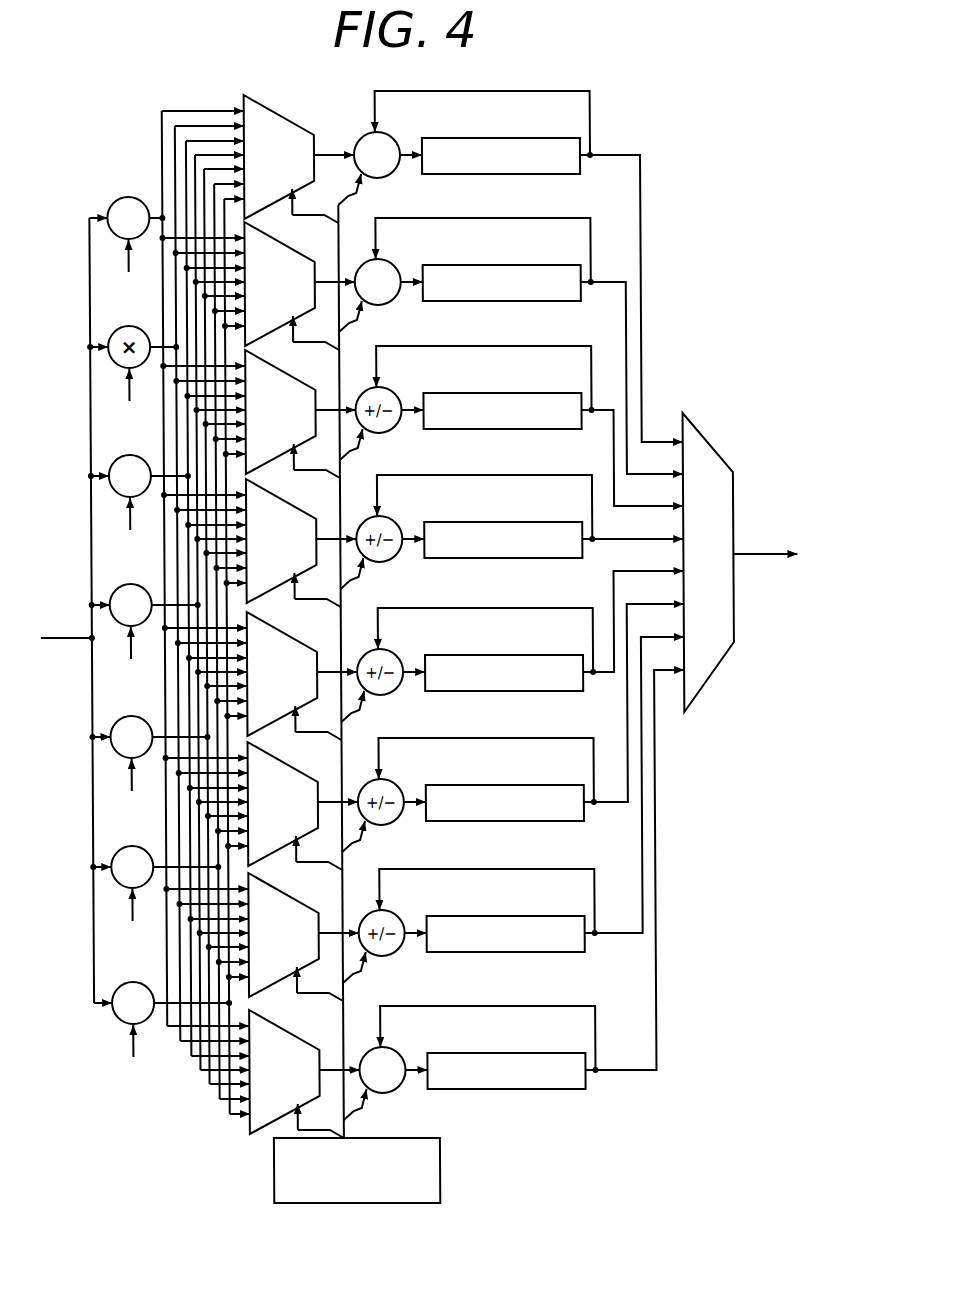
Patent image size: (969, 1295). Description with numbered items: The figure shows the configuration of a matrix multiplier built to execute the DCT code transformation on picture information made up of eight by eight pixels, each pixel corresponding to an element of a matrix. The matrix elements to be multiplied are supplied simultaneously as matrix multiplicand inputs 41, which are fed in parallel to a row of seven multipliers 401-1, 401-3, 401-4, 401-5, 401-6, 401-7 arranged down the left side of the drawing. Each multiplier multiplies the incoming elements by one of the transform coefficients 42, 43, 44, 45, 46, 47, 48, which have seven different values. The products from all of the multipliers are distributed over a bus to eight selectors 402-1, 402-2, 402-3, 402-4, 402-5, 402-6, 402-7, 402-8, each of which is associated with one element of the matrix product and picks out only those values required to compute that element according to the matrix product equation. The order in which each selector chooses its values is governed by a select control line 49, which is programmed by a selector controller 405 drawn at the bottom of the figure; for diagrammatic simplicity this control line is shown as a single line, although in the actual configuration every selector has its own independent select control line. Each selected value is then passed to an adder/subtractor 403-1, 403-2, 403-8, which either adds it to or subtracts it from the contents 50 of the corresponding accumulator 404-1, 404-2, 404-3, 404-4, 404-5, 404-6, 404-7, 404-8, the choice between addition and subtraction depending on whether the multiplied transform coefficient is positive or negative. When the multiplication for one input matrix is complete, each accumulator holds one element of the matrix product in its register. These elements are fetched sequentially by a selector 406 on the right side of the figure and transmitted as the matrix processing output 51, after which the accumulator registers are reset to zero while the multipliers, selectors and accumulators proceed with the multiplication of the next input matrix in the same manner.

The matrix multiplicand inputs 41 is at (50, 638).
The transform coefficient 42 is at (127, 273).
The transform coefficient 43 is at (127, 402).
The transform coefficient 44 is at (127, 531).
The transform coefficient 45 is at (127, 660).
The transform coefficient 46 is at (127, 792).
The transform coefficient 47 is at (127, 922).
The transform coefficient 48 is at (125, 1054).
The select control line 49 is at (340, 1117).
The contents of accumulator 50 is at (642, 228).
The matrix processing output 51 is at (760, 552).
The multiplier 401-1 is at (117, 198).
The multiplier 401-3 is at (117, 456).
The multiplier 401-4 is at (117, 585).
The multiplier 401-5 is at (117, 717).
The multiplier 401-6 is at (117, 847).
The multiplier 401-7 is at (117, 983).
The selector 402-1 is at (306, 127).
The selector 402-2 is at (306, 254).
The selector 402-3 is at (306, 382).
The selector 402-4 is at (306, 511).
The selector 402-5 is at (306, 644).
The selector 402-6 is at (306, 774).
The selector 402-7 is at (306, 905).
The selector 402-8 is at (306, 1042).
The adder/subtractor 403-1 is at (392, 138).
The adder/subtractor 403-2 is at (392, 265).
The adder/subtractor 403-8 is at (392, 1053).
The accumulator 404-1 is at (490, 138).
The accumulator 404-2 is at (490, 265).
The accumulator 404-3 is at (490, 393).
The accumulator 404-4 is at (490, 522).
The accumulator 404-5 is at (490, 655).
The accumulator 404-6 is at (490, 785).
The accumulator 404-7 is at (490, 916).
The accumulator 404-8 is at (490, 1053).
The selector controller 405 is at (412, 1137).
The selector 406 is at (717, 452).